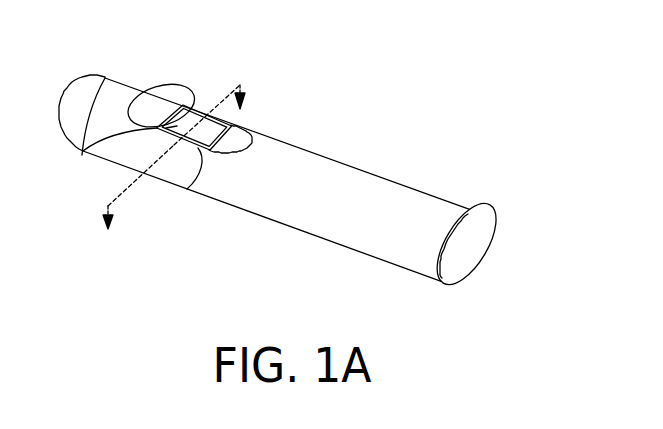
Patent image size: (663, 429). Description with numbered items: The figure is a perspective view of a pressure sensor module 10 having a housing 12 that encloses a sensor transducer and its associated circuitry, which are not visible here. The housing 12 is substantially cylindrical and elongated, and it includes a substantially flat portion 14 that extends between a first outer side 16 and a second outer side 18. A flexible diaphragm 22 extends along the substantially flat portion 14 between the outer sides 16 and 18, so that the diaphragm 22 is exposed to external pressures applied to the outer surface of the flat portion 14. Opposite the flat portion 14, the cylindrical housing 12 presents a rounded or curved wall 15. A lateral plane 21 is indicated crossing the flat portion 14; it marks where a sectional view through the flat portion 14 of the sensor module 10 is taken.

The pressure sensor module 10 is at (326, 24).
The housing 12 is at (395, 182).
The substantially flat portion 14 is at (252, 131).
The rounded or curved wall 15 is at (232, 205).
The first outer side 16 is at (195, 92).
The second outer side 18 is at (189, 187).
The lateral plane 21 is at (220, 100).
The flexible diaphragm 22 is at (92, 148).